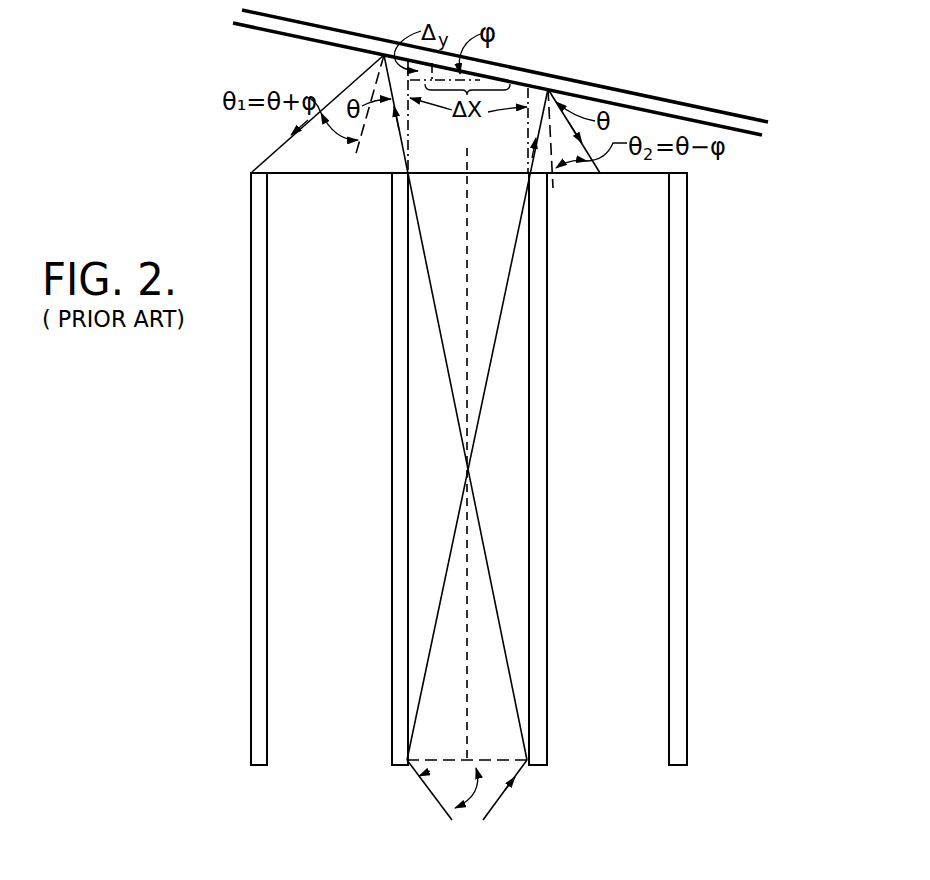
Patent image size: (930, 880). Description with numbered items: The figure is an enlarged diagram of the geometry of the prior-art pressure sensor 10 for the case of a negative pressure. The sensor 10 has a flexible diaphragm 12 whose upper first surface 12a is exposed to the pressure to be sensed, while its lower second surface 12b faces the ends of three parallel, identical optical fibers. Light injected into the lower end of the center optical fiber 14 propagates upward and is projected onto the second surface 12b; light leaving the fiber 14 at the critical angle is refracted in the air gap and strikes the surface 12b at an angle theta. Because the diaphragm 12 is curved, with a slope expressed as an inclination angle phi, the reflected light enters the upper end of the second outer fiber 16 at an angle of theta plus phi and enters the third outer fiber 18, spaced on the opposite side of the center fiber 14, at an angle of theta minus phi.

The pressure sensor 10 is at (540, 91).
The diaphragm 12 is at (540, 92).
The upper first surface 12a is at (549, 86).
The second surface 12b is at (748, 136).
The center optical fiber 14 is at (487, 467).
The second outer optical fiber 16 is at (285, 397).
The third outer optical fiber 18 is at (615, 318).